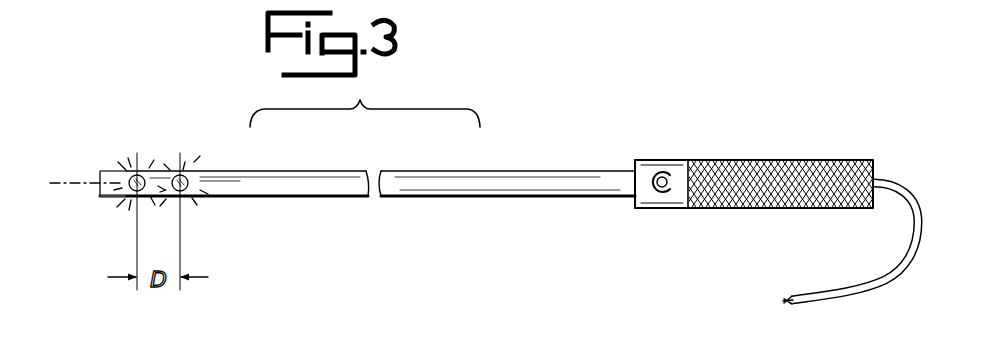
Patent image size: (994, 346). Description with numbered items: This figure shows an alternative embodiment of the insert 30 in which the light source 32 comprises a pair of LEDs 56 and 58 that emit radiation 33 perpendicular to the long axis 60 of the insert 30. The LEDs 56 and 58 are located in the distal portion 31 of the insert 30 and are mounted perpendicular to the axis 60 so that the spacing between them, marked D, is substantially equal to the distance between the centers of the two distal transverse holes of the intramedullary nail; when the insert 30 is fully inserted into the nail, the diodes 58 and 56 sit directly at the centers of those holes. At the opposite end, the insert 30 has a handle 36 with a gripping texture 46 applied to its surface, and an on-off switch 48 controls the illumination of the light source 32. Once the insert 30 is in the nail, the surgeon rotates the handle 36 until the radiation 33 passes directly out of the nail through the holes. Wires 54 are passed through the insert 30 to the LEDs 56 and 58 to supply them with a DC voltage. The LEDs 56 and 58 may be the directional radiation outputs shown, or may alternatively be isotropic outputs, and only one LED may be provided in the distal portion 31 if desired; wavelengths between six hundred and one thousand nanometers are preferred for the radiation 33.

The insert 30 is at (472, 178).
The distal portion 31 is at (112, 151).
The light source 32 is at (181, 139).
The radiation 33 is at (140, 154).
The handle 36 is at (851, 143).
The gripping texture 46 is at (758, 183).
The on-off switch 48 is at (671, 176).
The wires 54 is at (862, 284).
The LED 56 is at (197, 201).
The LED 58 is at (123, 200).
The axis 60 is at (66, 178).